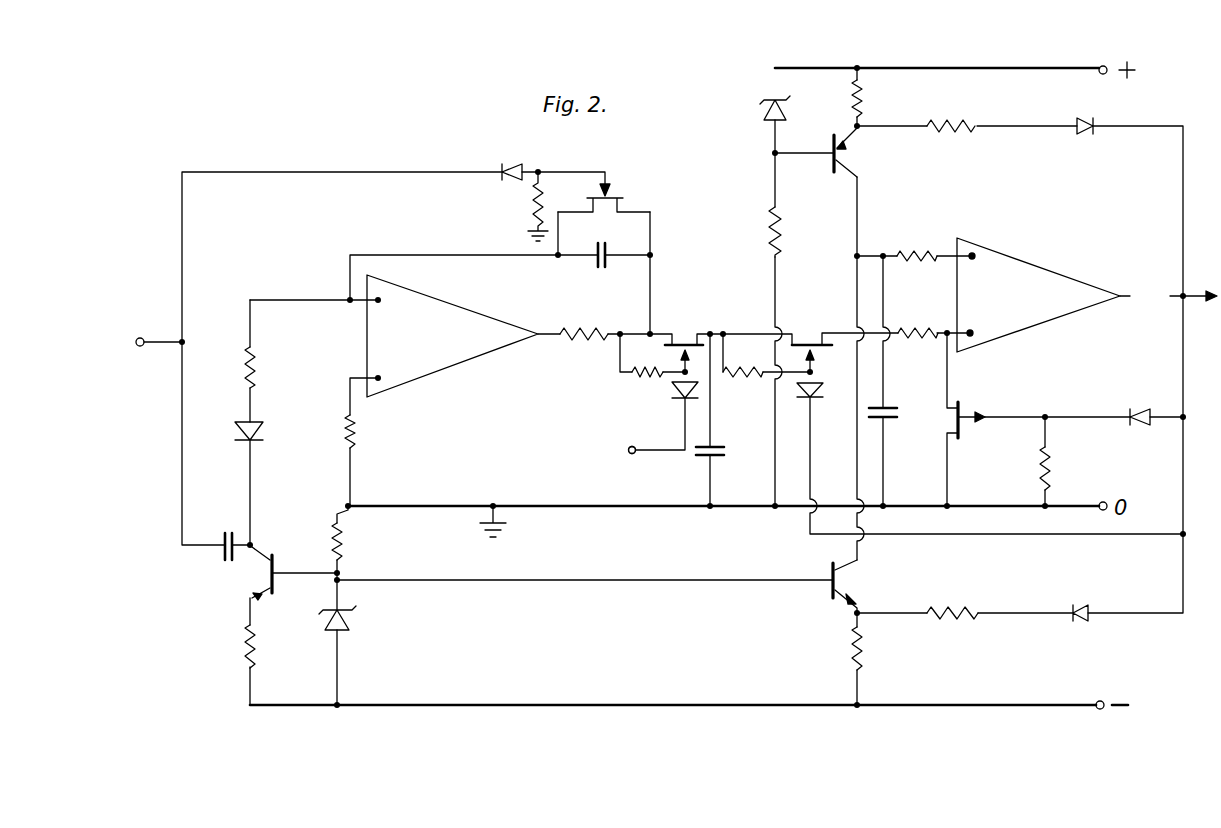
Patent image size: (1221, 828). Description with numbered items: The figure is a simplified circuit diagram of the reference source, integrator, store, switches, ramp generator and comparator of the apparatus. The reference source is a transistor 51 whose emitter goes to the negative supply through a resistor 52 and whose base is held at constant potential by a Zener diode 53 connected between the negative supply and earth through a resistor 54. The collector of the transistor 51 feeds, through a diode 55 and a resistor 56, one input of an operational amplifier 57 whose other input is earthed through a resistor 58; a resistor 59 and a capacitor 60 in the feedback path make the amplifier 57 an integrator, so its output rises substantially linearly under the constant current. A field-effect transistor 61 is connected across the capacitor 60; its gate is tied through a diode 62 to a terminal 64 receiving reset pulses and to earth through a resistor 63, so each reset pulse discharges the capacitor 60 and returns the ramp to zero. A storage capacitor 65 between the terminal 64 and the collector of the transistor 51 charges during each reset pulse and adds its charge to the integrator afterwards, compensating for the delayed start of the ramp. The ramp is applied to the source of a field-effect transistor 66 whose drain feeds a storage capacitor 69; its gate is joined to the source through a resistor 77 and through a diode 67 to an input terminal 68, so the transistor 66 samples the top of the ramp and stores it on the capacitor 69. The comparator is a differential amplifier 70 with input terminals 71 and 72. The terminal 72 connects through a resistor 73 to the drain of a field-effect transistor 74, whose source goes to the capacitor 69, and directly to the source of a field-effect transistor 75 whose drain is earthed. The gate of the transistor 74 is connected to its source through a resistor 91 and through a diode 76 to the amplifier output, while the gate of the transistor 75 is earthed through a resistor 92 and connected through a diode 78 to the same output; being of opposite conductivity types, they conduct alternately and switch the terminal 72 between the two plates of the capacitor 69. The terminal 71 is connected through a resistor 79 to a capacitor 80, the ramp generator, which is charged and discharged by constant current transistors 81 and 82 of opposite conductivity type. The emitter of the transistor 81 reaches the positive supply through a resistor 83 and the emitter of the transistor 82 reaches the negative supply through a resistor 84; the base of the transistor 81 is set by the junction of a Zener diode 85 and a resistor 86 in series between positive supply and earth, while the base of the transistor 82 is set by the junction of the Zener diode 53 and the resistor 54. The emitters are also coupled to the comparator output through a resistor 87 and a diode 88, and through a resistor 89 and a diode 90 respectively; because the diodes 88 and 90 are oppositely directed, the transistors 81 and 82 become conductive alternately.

The transistor 51 is at (277, 557).
The resistor 52 is at (257, 645).
The Zener diode 53 is at (350, 622).
The resistor 54 is at (344, 535).
The diode 55 is at (262, 430).
The resistor 56 is at (258, 367).
The operational amplifier 57 is at (402, 348).
The resistor 58 is at (357, 430).
The resistor 59 is at (582, 334).
The capacitor 60 is at (596, 267).
The field-effect transistor 61 is at (612, 195).
The diode 62 is at (524, 168).
The resistor 63 is at (530, 221).
The terminal 64 is at (150, 348).
The storage capacitor 65 is at (222, 530).
The field-effect transistor 66 is at (688, 342).
The diode 67 is at (672, 392).
The input terminal 68 is at (628, 451).
The storage capacitor 69 is at (700, 464).
The differential amplifier 70 is at (985, 310).
The input terminal 71 is at (974, 254).
The input terminal 72 is at (972, 338).
The resistor 73 is at (929, 330).
The field-effect transistor 74 is at (812, 344).
The field-effect transistor 75 is at (962, 433).
The diode 76 is at (826, 395).
The resistor 77 is at (634, 382).
The diode 78 is at (1130, 424).
The resistor 79 is at (913, 254).
The capacitor 80 is at (887, 406).
The transistor 81 is at (845, 152).
The transistor 82 is at (830, 590).
The resistor 83 is at (864, 101).
The resistor 84 is at (864, 652).
The Zener diode 85 is at (764, 100).
The resistor 86 is at (768, 228).
The resistor 87 is at (976, 126).
The diode 88 is at (1078, 118).
The resistor 89 is at (960, 610).
The diode 90 is at (1078, 622).
The resistor 91 is at (766, 376).
The resistor 92 is at (1038, 479).